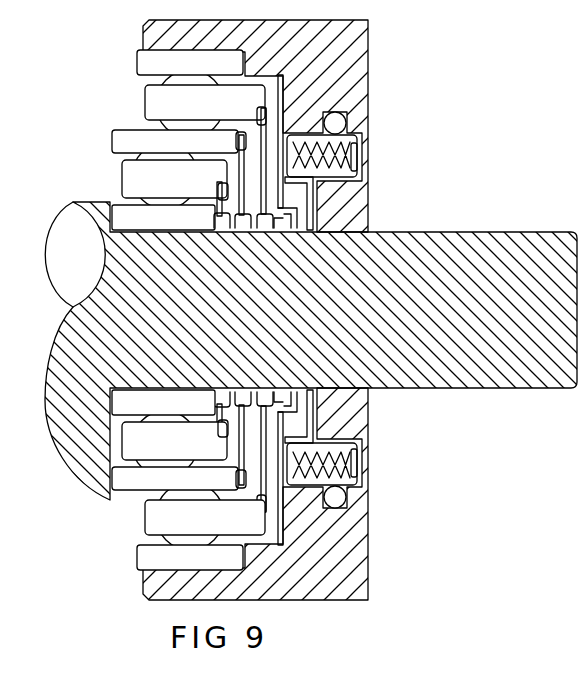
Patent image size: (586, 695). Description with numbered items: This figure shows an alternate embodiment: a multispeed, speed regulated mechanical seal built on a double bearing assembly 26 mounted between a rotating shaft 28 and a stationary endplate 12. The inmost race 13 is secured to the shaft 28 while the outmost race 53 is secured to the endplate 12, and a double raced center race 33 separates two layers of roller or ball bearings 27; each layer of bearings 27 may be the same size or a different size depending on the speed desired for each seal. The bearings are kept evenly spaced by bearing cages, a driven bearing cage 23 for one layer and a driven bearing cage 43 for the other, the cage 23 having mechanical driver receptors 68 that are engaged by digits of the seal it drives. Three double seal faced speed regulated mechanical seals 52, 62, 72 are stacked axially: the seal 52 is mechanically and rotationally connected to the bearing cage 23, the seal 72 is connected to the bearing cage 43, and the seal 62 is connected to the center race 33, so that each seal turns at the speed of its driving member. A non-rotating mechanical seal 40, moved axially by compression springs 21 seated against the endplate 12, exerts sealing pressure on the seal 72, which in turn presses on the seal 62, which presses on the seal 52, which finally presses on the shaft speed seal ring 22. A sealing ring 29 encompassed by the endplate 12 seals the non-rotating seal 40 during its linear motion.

The stationary endplate 12 is at (358, 532).
The inmost race 13 is at (163, 404).
The compression springs 21 is at (355, 160).
The shaft speed seal ring 22 is at (212, 219).
The bearing cage 23 is at (175, 176).
The double bearing assembly 26 is at (151, 480).
The roller or ball bearings 27 is at (155, 140).
The rotating shaft 28 is at (507, 355).
The sealing ring 29 is at (341, 494).
The center race 33 is at (179, 142).
The non-rotating mechanical seal 40 is at (288, 233).
The driven bearing cage 43 is at (205, 104).
The speed regulated mechanical seal 52 is at (222, 233).
The outer race 53 is at (190, 65).
The speed regulated mechanical seal 62 is at (247, 233).
The mechanical driver receptors 68 is at (220, 433).
The speed regulated mechanical seal 72 is at (266, 233).